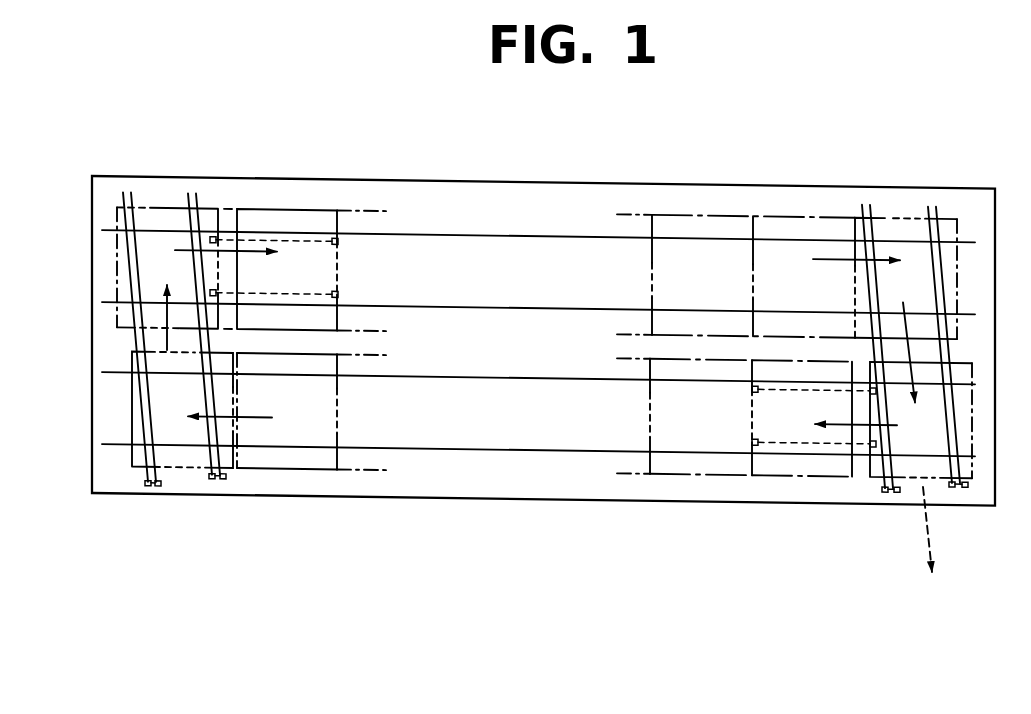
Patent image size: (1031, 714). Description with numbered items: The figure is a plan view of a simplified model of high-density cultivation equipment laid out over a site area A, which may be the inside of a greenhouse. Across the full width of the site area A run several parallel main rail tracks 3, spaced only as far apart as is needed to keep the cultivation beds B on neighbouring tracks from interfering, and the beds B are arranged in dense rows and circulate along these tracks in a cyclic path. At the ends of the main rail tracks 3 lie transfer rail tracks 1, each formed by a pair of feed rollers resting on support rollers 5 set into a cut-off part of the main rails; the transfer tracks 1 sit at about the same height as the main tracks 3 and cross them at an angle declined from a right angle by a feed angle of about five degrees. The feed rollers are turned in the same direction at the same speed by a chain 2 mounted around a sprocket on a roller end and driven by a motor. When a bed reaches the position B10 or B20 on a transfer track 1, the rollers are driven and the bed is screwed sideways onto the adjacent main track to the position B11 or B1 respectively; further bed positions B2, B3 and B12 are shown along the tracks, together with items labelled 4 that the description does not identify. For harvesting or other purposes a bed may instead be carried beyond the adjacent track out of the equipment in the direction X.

The transfer rail track 1 is at (212, 432).
The chain 2 is at (200, 478).
The main rail track 3 is at (467, 233).
The transfer device 4 is at (338, 241).
The support roller 5 is at (602, 197).
The site area A is at (668, 183).
The cultivation bed B is at (380, 207).
The cultivation bed position B1 is at (905, 478).
The module B2 is at (772, 477).
The module B3 is at (680, 478).
The cultivation bed position B10 is at (168, 468).
The cultivation bed position B11 is at (163, 205).
The module B12 is at (262, 205).
The cultivation bed position B20 is at (885, 210).
The outward movement direction X is at (931, 550).